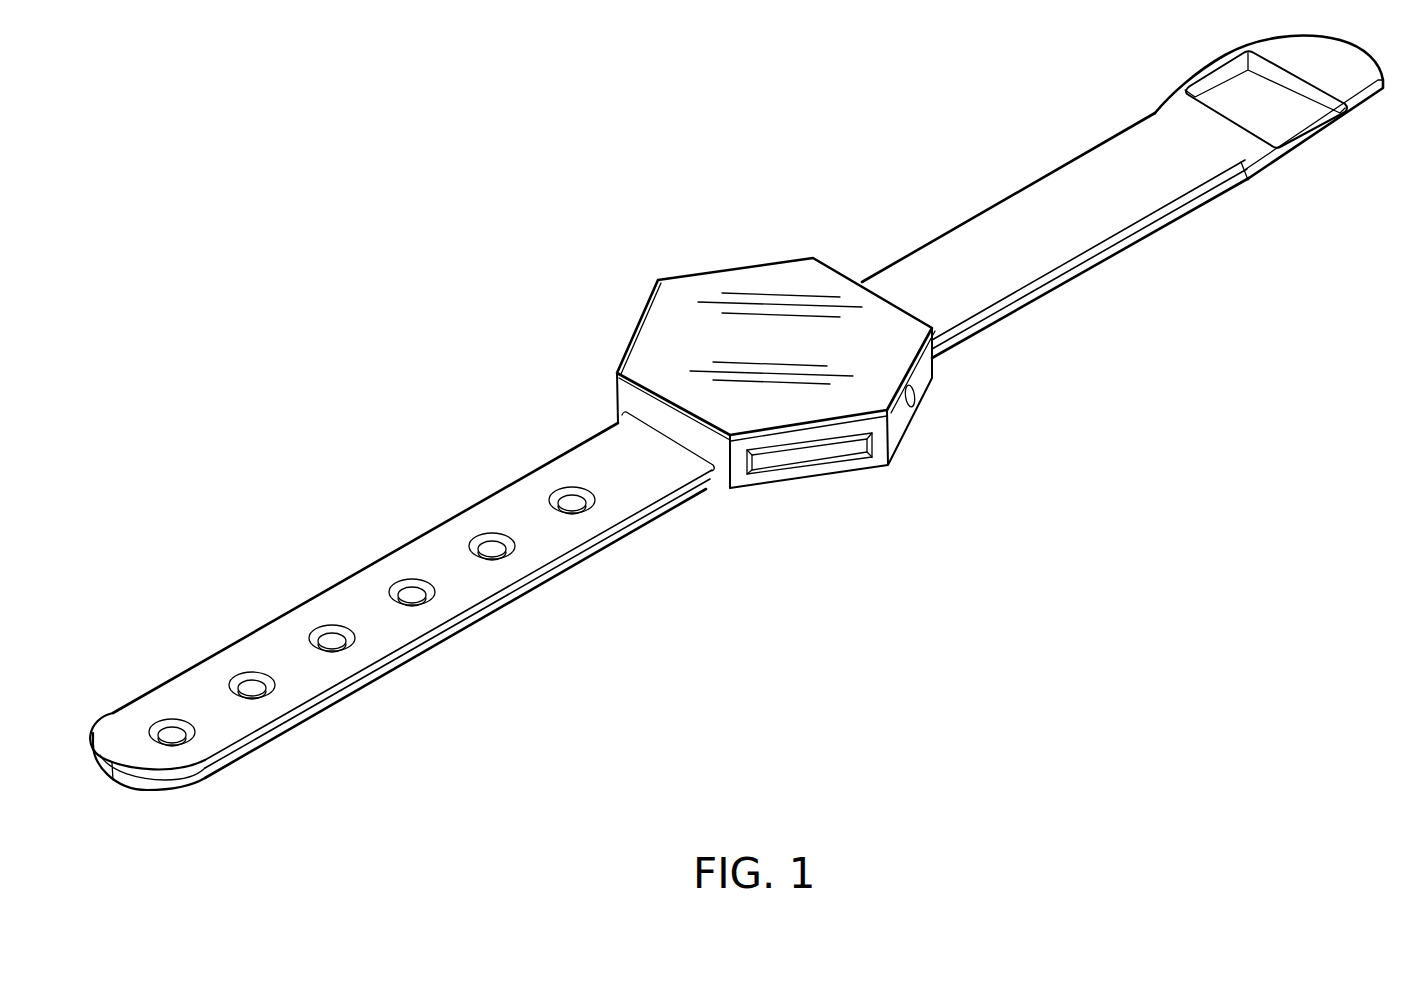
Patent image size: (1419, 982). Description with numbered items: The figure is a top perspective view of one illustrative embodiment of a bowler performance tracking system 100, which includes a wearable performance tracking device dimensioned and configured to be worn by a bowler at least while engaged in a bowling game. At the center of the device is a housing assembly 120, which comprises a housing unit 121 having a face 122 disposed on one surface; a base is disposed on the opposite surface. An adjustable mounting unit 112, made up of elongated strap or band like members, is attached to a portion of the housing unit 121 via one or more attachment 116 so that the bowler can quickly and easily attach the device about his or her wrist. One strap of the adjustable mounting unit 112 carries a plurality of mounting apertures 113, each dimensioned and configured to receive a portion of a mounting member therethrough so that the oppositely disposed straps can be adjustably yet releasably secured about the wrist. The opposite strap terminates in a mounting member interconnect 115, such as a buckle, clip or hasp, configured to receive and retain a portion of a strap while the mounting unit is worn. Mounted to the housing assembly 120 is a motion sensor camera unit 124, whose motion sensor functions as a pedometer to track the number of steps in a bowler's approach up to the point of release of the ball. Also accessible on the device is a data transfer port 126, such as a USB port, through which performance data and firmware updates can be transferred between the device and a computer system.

The bowler performance tracking system 100 is at (318, 236).
The adjustable mounting unit 112 is at (1057, 293).
The mounting aperture 113 is at (423, 603).
The mounting member interconnect 115 is at (1322, 153).
The attachment 116 is at (710, 490).
The housing assembly 120 is at (906, 476).
The housing unit 121 is at (617, 400).
The face 122 is at (762, 285).
The motion sensor camera unit 124 is at (912, 407).
The data transfer port 126 is at (800, 462).